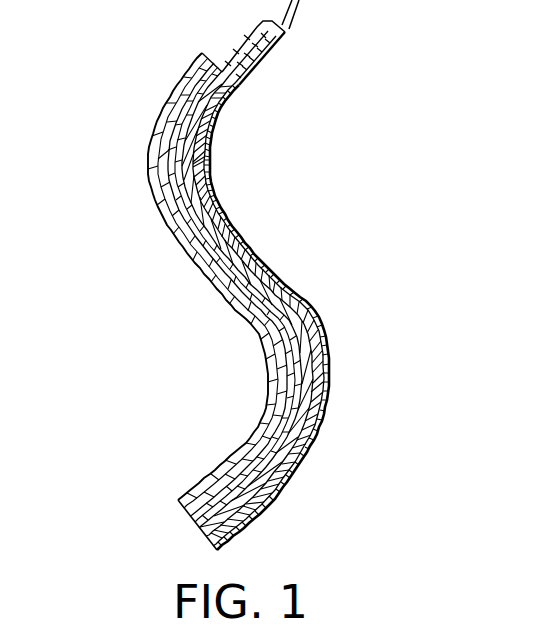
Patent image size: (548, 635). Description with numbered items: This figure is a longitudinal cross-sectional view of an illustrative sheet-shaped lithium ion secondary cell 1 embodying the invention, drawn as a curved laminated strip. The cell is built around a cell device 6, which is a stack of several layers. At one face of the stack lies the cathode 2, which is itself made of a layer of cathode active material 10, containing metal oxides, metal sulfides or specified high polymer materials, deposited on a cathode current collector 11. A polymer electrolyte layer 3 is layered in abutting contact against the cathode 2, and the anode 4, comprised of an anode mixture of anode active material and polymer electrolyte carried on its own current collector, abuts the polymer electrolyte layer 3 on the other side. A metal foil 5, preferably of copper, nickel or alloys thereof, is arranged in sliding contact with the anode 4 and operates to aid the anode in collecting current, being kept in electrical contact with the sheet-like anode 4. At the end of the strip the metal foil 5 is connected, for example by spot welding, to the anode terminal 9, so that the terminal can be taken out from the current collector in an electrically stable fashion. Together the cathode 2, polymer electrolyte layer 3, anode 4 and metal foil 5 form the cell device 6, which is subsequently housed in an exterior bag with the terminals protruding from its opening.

The sheet-shaped lithium ion secondary cell 1 is at (125, 118).
The cathode 2 is at (406, 428).
The polymer electrolyte layer 3 is at (295, 407).
The anode 4 is at (310, 375).
The metal foil 5 is at (315, 338).
The cell device 6 is at (437, 490).
The anode terminal 9 is at (308, 0).
The cathode active material layer 10 is at (278, 423).
The cathode current collector 11 is at (258, 458).